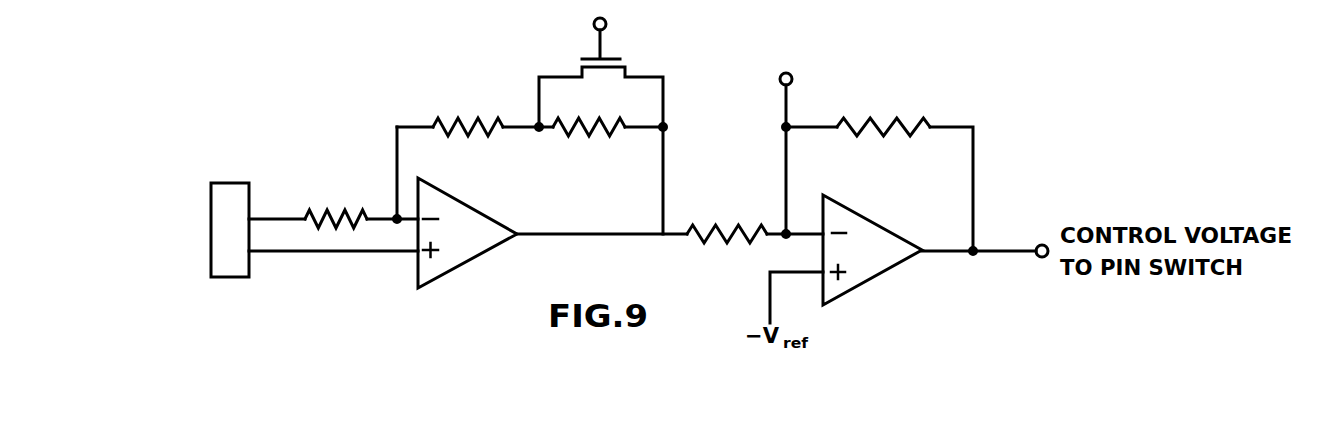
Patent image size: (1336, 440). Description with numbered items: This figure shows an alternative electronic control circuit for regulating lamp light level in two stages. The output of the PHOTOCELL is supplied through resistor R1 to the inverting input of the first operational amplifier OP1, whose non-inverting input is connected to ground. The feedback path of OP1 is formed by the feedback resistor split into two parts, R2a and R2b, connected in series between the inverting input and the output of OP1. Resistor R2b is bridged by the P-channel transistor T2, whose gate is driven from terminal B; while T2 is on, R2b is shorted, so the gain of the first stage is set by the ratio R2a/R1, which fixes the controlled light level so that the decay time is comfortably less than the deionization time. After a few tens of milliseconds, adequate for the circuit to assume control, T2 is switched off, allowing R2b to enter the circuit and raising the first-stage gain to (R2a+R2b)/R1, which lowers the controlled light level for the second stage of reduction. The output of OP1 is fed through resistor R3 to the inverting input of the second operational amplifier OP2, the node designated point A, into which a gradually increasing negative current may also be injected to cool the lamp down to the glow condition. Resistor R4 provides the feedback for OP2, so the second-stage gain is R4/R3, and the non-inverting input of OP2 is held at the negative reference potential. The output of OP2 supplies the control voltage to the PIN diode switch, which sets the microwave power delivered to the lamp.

The photocell PHOTOCELL is at (233, 215).
The resistor R1 is at (336, 203).
The resistor R2a is at (468, 107).
The resistor R2b is at (589, 145).
The P-channel transistor T2 is at (601, 72).
The gate terminal B is at (620, 21).
The operational amplifier OP1 is at (467, 233).
The resistor R3 is at (727, 217).
The point A is at (775, 151).
The resistor R4 is at (883, 108).
The operational amplifier OP2 is at (872, 250).